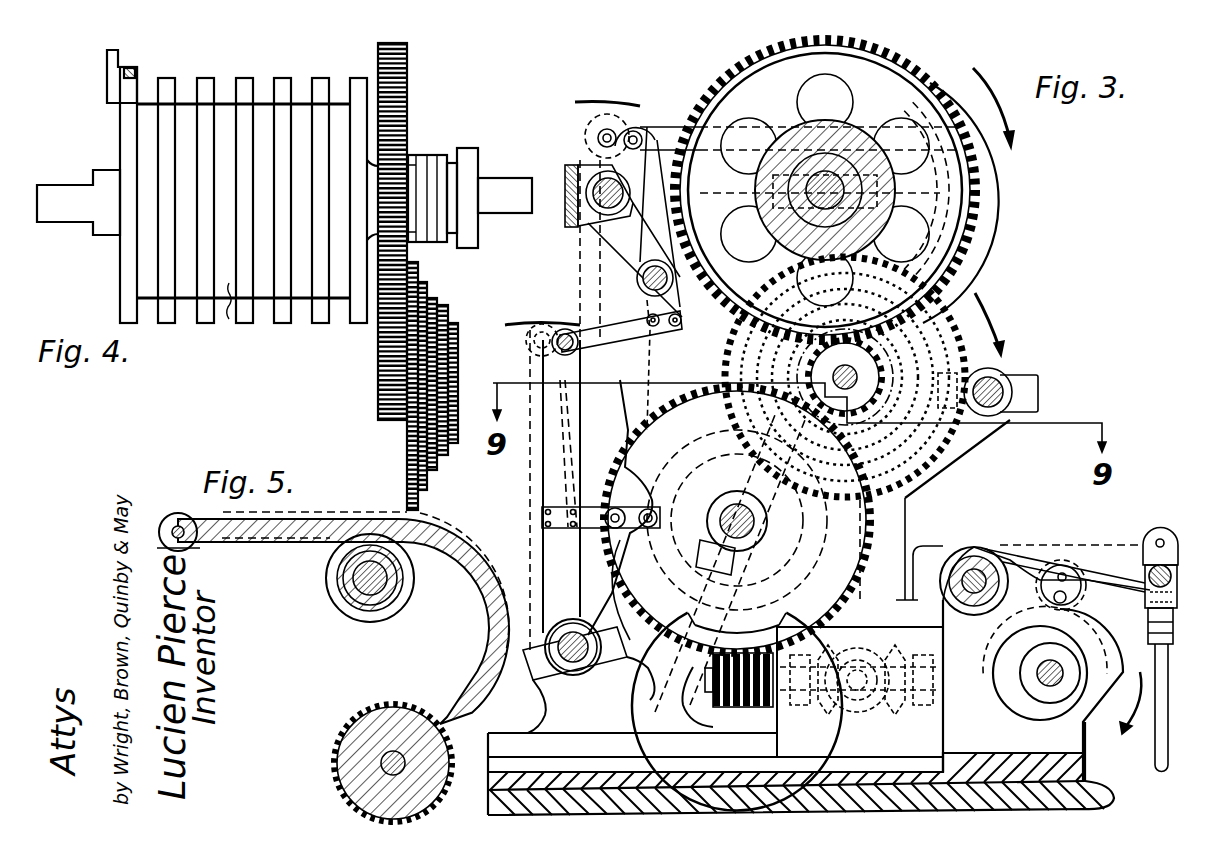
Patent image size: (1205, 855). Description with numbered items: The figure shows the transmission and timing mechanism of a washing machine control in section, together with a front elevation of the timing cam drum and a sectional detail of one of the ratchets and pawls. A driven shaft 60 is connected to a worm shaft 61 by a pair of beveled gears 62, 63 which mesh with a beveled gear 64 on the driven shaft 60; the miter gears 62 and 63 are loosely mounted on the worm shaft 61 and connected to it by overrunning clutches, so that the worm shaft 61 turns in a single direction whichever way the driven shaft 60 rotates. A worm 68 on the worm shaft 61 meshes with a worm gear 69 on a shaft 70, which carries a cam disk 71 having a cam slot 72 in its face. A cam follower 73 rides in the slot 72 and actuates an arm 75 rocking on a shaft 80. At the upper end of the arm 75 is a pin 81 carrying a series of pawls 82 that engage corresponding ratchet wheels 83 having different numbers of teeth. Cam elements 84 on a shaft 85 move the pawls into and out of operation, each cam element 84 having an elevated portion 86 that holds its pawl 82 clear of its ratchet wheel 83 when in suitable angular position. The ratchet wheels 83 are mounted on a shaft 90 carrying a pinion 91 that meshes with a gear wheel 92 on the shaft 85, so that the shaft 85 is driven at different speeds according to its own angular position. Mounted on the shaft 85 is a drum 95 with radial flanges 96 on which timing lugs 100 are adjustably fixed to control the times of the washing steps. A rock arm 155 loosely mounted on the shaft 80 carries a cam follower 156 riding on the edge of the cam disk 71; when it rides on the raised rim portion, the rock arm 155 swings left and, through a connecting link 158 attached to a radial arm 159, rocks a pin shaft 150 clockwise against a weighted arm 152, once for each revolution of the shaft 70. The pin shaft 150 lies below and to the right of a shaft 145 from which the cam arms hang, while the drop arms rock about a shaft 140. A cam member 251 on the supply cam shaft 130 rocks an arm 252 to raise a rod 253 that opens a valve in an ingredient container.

In FIG. 3, the driven shaft 60 is at (882, 706).
In FIG. 3, the worm shaft 61 is at (782, 700).
In FIG. 3, the beveled gear 62 is at (840, 655).
In FIG. 3, the beveled gear 63 is at (905, 655).
In FIG. 3, the beveled gear 64 is at (856, 712).
In FIG. 3, the worm 68 is at (713, 700).
In FIG. 3, the worm gear 69 is at (660, 648).
In FIG. 3, the shaft 70 is at (720, 520).
In FIG. 3, the cam disk 71 is at (665, 580).
In FIG. 3, the cam slot 72 is at (802, 572).
In FIG. 3, the cam follower 73 is at (737, 520).
In FIG. 3, the arm 75 is at (628, 368).
In FIG. 3, the shaft 80 is at (578, 668).
In FIG. 3, the pin 81 is at (641, 128).
In FIG. 5, the pawl 82 is at (330, 530).
In FIG. 3, the pawl 82 is at (995, 212).
In FIG. 4, the ratchet wheel 83 is at (458, 380).
In FIG. 5, the ratchet wheel 83 is at (357, 737).
In FIG. 3, the ratchet wheel 83 is at (945, 450).
In FIG. 4, the cam element 84 is at (432, 155).
In FIG. 5, the cam element 84 is at (338, 592).
In FIG. 4, the shaft 85 is at (500, 178).
In FIG. 5, the shaft 85 is at (345, 612).
In FIG. 5, the elevated portion 86 is at (380, 626).
In FIG. 3, the shaft 90 is at (867, 363).
In FIG. 3, the pinion 91 is at (963, 349).
In FIG. 3, the gear wheel 92 is at (912, 92).
In FIG. 4, the drum 95 is at (229, 300).
In FIG. 4, the radial flange 96 is at (203, 85).
In FIG. 4, the timing lug 100 is at (107, 80).
In FIG. 3, the supply cam shaft 130 is at (1040, 684).
In FIG. 3, the shaft 140 is at (997, 400).
In FIG. 3, the shaft 145 is at (586, 172).
In FIG. 3, the pin shaft 150 is at (615, 270).
In FIG. 3, the weighted arm 152 is at (805, 620).
In FIG. 3, the rock arm 155 is at (547, 484).
In FIG. 3, the cam follower 156 is at (603, 470).
In FIG. 3, the connecting link 158 is at (580, 313).
In FIG. 3, the radial arm 159 is at (672, 305).
In FIG. 3, the cam member 251 is at (1012, 690).
In FIG. 3, the arm 252 is at (1025, 562).
In FIG. 3, the rod 253 is at (1160, 710).